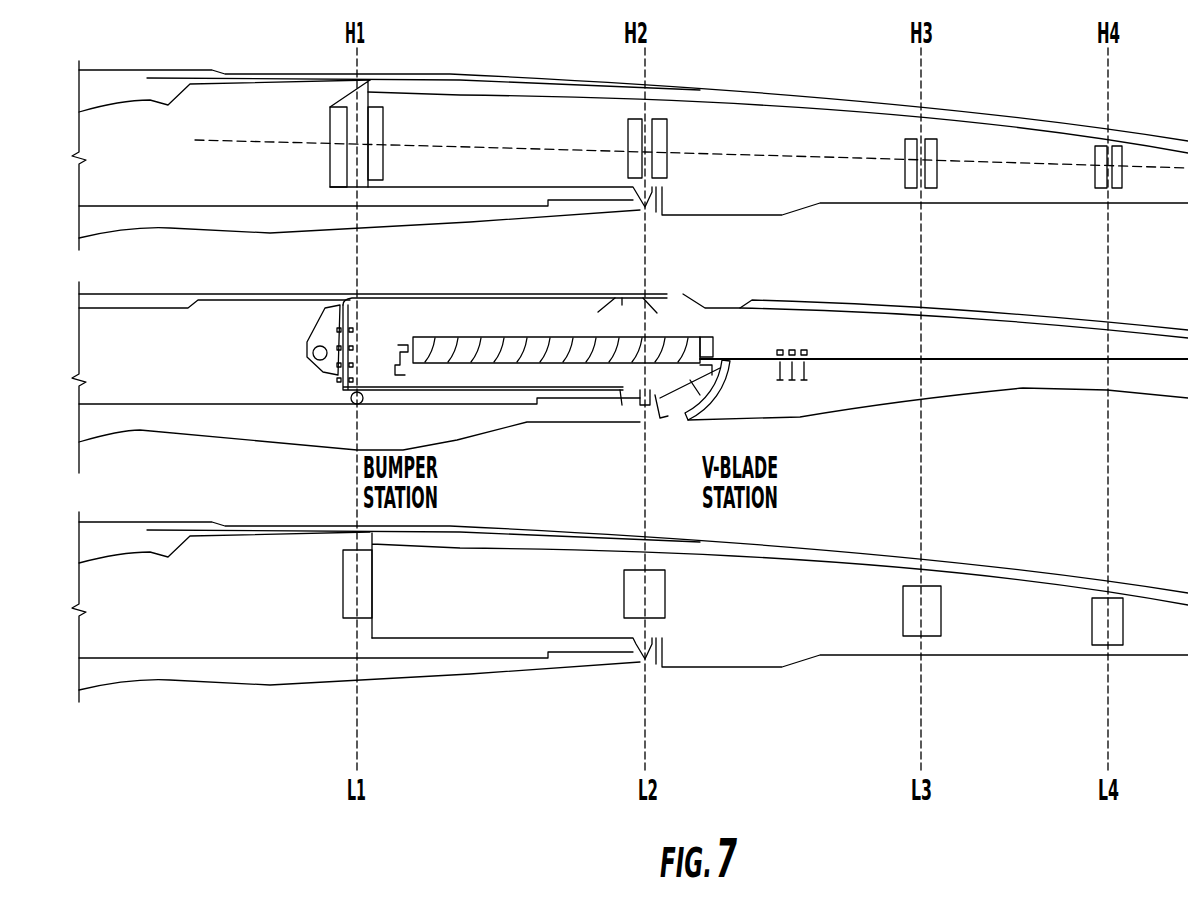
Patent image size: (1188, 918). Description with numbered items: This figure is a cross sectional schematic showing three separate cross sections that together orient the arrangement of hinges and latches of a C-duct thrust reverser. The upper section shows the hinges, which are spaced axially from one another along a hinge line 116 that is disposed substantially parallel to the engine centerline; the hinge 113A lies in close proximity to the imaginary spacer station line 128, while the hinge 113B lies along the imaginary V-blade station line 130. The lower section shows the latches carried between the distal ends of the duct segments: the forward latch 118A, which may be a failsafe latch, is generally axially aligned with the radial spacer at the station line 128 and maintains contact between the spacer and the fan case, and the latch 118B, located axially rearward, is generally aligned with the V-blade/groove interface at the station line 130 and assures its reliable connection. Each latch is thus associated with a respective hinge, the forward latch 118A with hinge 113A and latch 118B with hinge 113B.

The hinge 113A is at (383, 115).
The hinge 113B is at (667, 122).
The hinge line 116 is at (232, 141).
The forward latch 118A is at (343, 572).
The latch 118B is at (624, 572).
The spacer station line 128 is at (358, 256).
The V-blade station line 130 is at (646, 256).